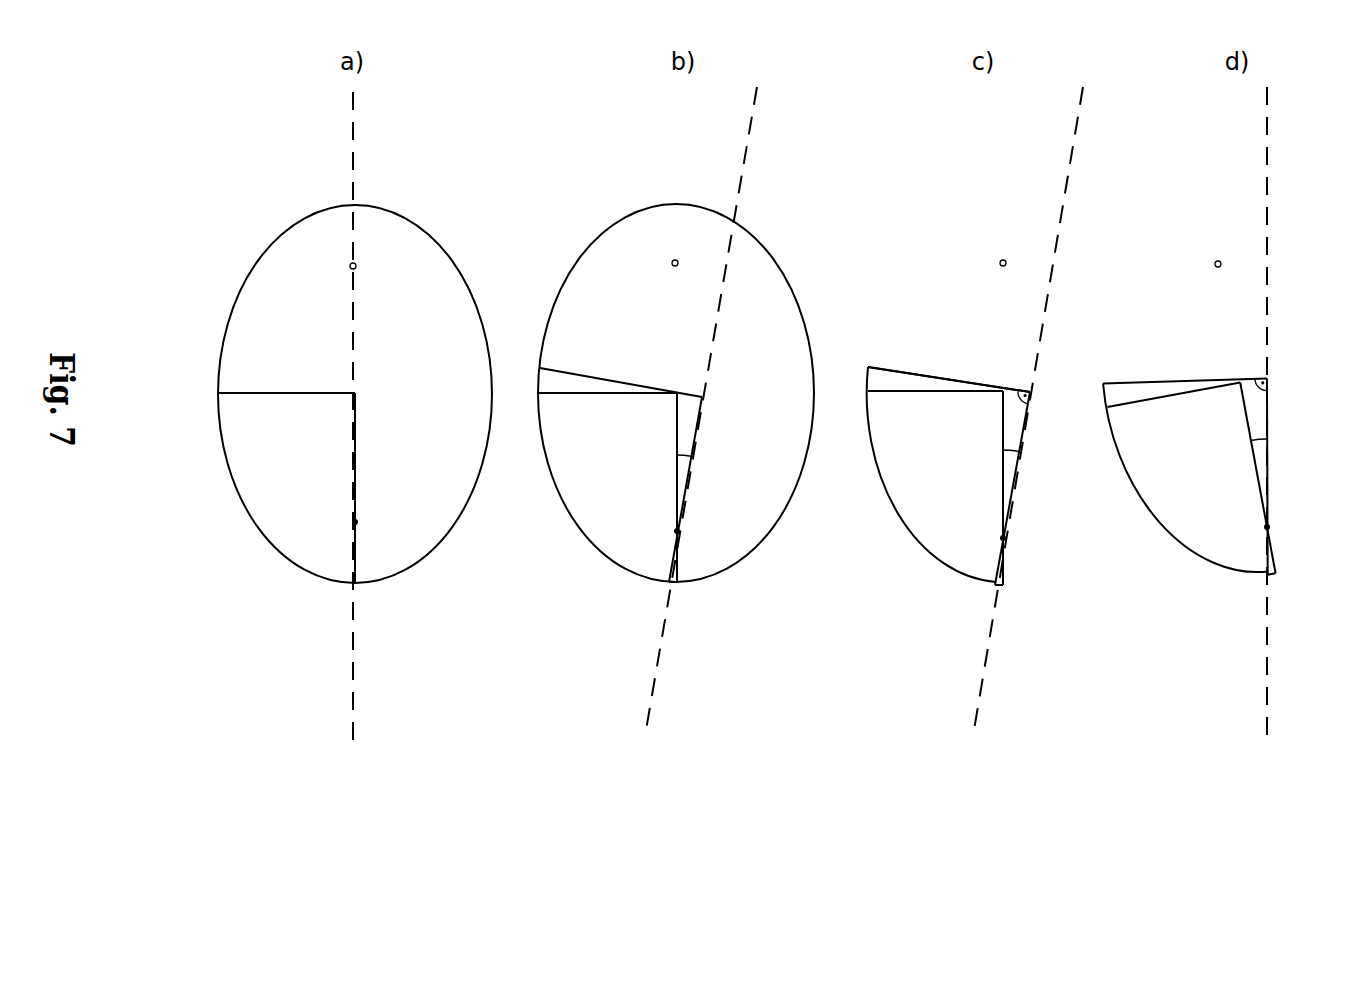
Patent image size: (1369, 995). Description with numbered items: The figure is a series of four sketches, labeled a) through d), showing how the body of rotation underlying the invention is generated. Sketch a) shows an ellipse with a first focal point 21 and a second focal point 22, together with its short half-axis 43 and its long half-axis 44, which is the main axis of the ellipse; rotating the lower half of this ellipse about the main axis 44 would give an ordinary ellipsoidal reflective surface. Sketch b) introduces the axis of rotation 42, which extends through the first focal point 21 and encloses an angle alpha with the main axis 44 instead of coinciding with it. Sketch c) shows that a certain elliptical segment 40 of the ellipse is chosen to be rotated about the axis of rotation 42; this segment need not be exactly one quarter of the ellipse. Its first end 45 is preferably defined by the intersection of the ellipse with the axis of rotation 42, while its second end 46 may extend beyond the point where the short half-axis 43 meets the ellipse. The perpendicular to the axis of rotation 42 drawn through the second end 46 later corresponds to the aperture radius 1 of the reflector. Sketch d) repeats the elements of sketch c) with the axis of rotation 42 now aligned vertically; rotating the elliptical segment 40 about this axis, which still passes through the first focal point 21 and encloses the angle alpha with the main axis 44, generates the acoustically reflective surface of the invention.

The aperture radius 1 is at (950, 375).
The first focal point 21 is at (362, 528).
The second focal point 22 is at (348, 263).
The elliptical segment 40 is at (542, 448).
The axis of rotation 42 is at (702, 434).
The short half-axis 43 is at (268, 399).
The long half-axis 44 is at (346, 456).
The first end 45 is at (676, 587).
The second end 46 is at (547, 366).